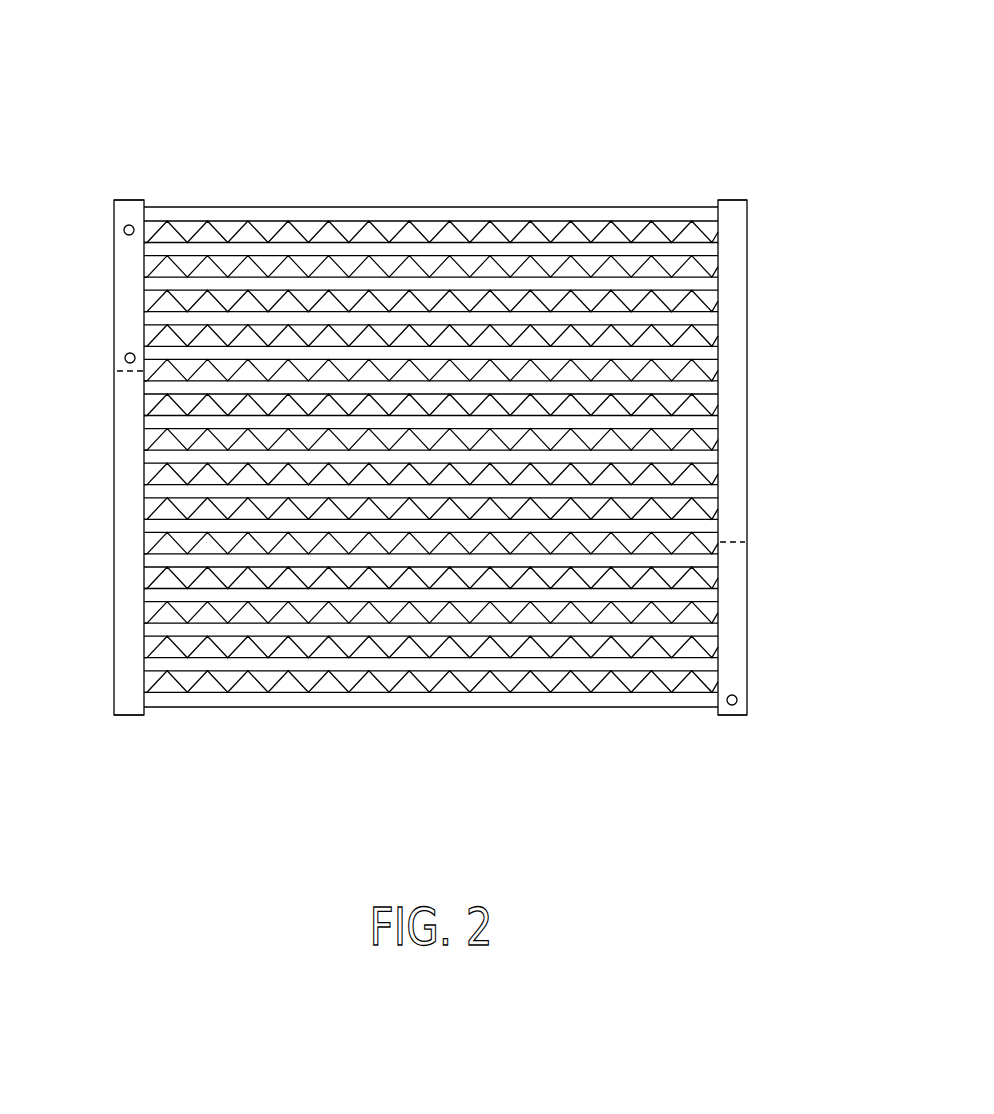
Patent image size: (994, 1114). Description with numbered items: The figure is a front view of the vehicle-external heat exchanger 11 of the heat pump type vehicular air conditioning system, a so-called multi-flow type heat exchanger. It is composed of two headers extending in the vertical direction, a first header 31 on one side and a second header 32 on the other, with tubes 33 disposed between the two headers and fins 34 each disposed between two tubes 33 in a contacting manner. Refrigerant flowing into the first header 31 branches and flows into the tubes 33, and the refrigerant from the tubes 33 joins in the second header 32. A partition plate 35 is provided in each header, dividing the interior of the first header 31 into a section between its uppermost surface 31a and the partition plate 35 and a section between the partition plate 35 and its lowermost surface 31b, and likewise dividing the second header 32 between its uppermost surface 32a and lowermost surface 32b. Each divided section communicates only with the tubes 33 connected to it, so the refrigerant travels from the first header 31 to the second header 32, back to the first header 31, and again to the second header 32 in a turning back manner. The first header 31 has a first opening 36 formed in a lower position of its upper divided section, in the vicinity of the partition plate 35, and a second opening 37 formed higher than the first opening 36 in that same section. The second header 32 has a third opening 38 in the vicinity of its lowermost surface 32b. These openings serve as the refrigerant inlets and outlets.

The vehicle-external heat exchanger 11 is at (567, 87).
The first header 31 is at (113, 210).
The uppermost surface of the first header 31a is at (128, 200).
The lowermost surface of the first header 31b is at (130, 717).
The second header 32 is at (748, 223).
The uppermost surface of the second header 32a is at (729, 200).
The lowermost surface of the second header 32b is at (733, 717).
The tubes 33 is at (306, 212).
The fins 34 is at (463, 230).
The partition plate 35 is at (128, 372).
The first opening 36 is at (126, 355).
The second opening 37 is at (125, 234).
The third opening 38 is at (740, 700).